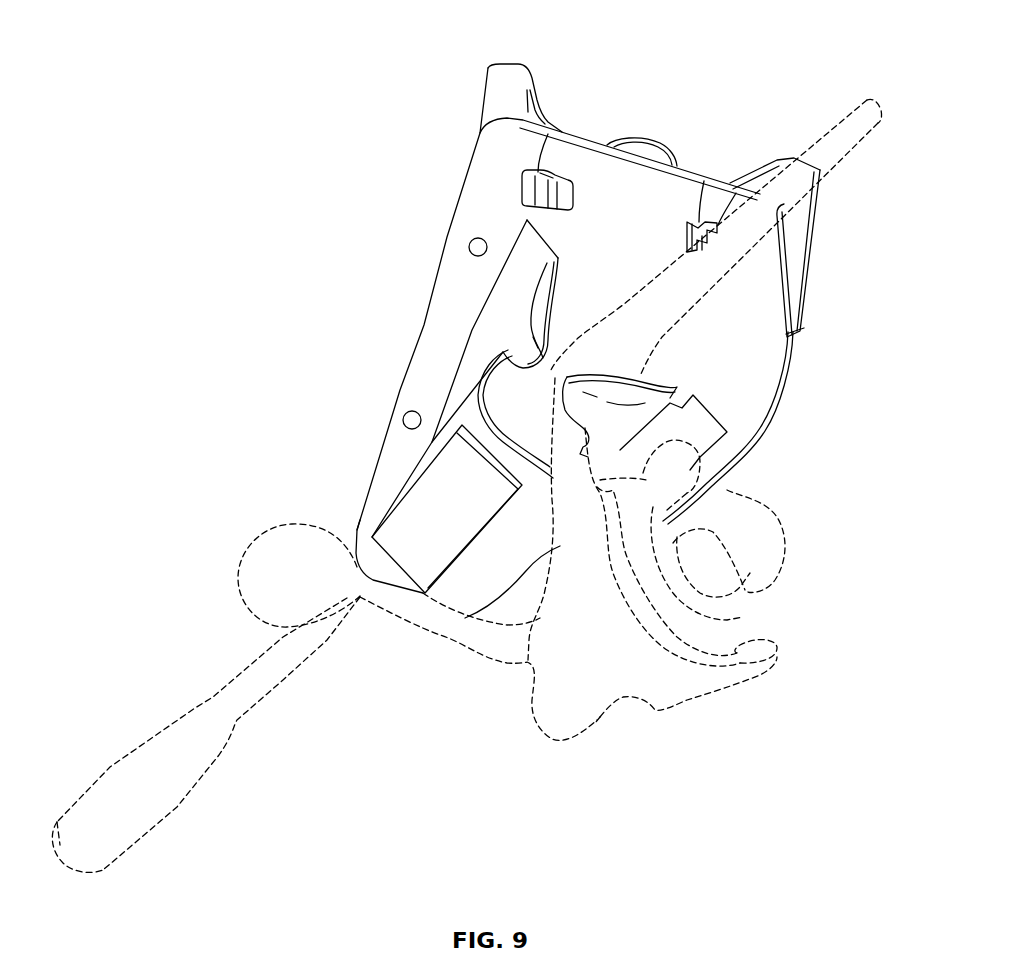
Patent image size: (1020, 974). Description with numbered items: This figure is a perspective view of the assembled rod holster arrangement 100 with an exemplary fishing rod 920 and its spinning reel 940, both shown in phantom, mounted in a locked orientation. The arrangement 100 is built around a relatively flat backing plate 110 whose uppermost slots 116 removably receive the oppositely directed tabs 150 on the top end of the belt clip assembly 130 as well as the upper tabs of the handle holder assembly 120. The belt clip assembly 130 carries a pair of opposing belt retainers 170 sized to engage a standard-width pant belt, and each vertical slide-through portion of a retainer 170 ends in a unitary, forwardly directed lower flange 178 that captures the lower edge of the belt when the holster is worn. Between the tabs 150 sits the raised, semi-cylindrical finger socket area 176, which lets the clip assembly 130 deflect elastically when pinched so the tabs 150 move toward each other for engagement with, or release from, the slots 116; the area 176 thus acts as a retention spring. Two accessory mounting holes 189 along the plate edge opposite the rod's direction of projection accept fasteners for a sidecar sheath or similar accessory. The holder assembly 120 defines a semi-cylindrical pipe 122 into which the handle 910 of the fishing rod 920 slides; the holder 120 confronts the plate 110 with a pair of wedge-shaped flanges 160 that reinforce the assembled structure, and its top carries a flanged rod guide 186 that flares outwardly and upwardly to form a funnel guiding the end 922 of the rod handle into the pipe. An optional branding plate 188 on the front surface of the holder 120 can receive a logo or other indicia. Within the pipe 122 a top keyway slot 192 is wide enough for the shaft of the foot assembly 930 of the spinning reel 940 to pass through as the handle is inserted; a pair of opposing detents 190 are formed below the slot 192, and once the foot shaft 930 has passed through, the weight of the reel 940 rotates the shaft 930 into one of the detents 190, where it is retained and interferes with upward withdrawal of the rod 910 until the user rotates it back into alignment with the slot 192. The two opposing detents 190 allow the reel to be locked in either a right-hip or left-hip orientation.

The rod holster arrangement 100 is at (797, 424).
The backing plate 110 is at (762, 366).
The slots 116 is at (572, 176).
The handle holder assembly 120 is at (363, 500).
The semi-cylindrical pipe 122 is at (415, 470).
The belt clip assembly 130 is at (522, 77).
The tabs 150 is at (533, 197).
The wedge-shaped flanges 160 is at (485, 323).
The belt retainers 170 is at (500, 100).
The raised finger socket area 176 is at (650, 142).
The lower flange 178 is at (799, 328).
The flanged rod guide 186 is at (530, 303).
The branding plate 188 is at (424, 526).
The accessory mounting holes 189 is at (467, 243).
The detents 190 is at (478, 381).
The keyway slot 192 is at (578, 372).
The handle 910 is at (823, 171).
The fishing rod 920 is at (188, 763).
The end of the rod handle 922 is at (70, 870).
The foot assembly 930 is at (556, 481).
The spinning reel 940 is at (619, 722).